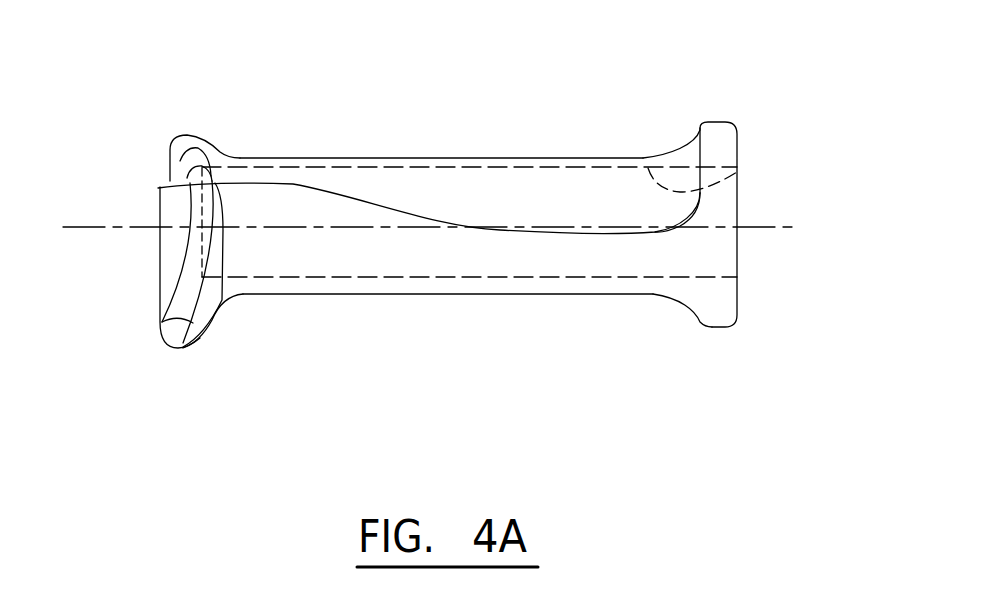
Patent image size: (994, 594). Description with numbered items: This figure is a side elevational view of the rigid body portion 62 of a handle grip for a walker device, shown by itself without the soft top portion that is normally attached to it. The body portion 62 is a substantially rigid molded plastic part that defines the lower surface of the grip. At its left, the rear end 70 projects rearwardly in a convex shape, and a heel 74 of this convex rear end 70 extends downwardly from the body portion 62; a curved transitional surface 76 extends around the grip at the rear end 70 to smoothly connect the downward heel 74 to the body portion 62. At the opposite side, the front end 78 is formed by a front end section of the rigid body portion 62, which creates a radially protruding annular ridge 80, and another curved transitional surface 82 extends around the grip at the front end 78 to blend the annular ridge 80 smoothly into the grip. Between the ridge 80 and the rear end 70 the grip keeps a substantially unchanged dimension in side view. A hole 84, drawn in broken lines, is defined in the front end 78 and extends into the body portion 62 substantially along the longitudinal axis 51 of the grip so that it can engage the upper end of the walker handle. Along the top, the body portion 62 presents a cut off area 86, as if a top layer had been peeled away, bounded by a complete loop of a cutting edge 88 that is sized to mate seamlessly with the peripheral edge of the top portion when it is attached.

The longitudinal axis 51 is at (755, 225).
The rigid body portion 62 is at (513, 295).
The rear end 70 is at (158, 259).
The heel 74 is at (188, 349).
The curved transitional surface 76 is at (221, 310).
The front end 78 is at (720, 258).
The radially protruding annular ridge 80 is at (717, 327).
The curved transitional surface 82 is at (652, 295).
The hole 84 is at (737, 172).
The cut off area 86 is at (475, 173).
The cutting edge 88 is at (293, 184).